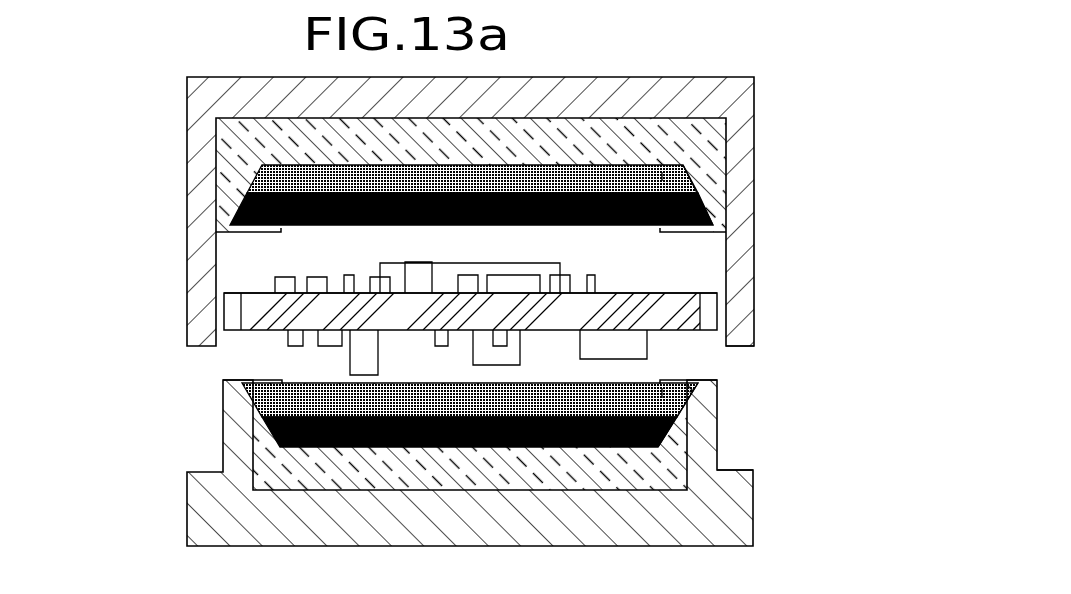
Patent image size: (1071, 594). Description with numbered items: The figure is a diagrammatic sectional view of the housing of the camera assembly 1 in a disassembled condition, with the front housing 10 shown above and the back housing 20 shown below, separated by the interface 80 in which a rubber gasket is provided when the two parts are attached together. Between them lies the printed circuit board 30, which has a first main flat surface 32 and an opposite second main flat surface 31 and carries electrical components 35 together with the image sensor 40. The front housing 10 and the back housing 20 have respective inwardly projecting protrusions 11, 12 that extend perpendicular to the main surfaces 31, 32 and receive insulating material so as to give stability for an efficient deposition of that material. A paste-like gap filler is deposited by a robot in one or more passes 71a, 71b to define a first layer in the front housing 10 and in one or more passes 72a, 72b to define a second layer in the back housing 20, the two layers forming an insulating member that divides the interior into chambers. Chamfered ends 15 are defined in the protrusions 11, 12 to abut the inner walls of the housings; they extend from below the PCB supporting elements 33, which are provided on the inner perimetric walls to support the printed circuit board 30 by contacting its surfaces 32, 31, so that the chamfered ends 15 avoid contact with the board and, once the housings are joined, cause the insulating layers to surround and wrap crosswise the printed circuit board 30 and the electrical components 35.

The camera assembly 1 is at (456, 287).
The front housing 10 is at (207, 92).
The protrusion 11 is at (225, 137).
The protrusion 12 is at (268, 477).
The chamfered end 15 is at (662, 177).
The back housing 20 is at (232, 525).
The printed circuit board 30 is at (253, 308).
The second main flat surface 31 is at (252, 307).
The first main flat surface 32 is at (252, 305).
The PCB supporting element 33 is at (697, 207).
The electrical component 35 is at (360, 365).
The image sensor 40 is at (540, 273).
The pass of the first layer 71a is at (265, 405).
The pass of the first layer 71b is at (277, 438).
The pass of the second layer 72a is at (232, 207).
The pass of the second layer 72b is at (262, 180).
The interface 80 is at (737, 346).